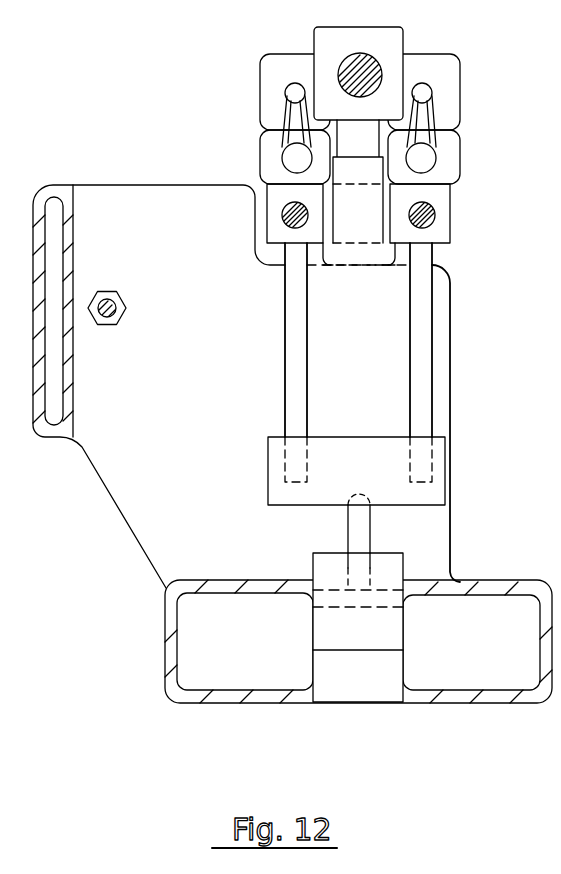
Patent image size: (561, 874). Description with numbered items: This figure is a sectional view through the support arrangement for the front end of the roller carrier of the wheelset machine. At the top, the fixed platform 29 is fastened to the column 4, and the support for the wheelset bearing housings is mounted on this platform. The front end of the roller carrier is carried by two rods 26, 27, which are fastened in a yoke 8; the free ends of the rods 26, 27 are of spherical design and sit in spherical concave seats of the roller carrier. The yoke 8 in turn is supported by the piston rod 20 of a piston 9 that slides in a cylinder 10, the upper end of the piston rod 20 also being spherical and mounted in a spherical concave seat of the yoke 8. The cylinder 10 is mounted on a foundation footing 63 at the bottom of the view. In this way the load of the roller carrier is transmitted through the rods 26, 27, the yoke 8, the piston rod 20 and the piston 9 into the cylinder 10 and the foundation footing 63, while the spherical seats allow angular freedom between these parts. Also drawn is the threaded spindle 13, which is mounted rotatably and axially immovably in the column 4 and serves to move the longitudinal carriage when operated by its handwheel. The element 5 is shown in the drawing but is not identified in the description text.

The column 4 is at (358, 643).
The bracket 5 is at (63, 432).
The yoke 8 is at (350, 452).
The piston 9 is at (370, 640).
The cylinder 10 is at (405, 620).
The threaded spindle 13 is at (105, 297).
The piston rod 20 is at (355, 523).
The rod 26 is at (415, 288).
The rod 27 is at (297, 350).
The fixed platform 29 is at (365, 168).
The foundation footing 63 is at (353, 682).